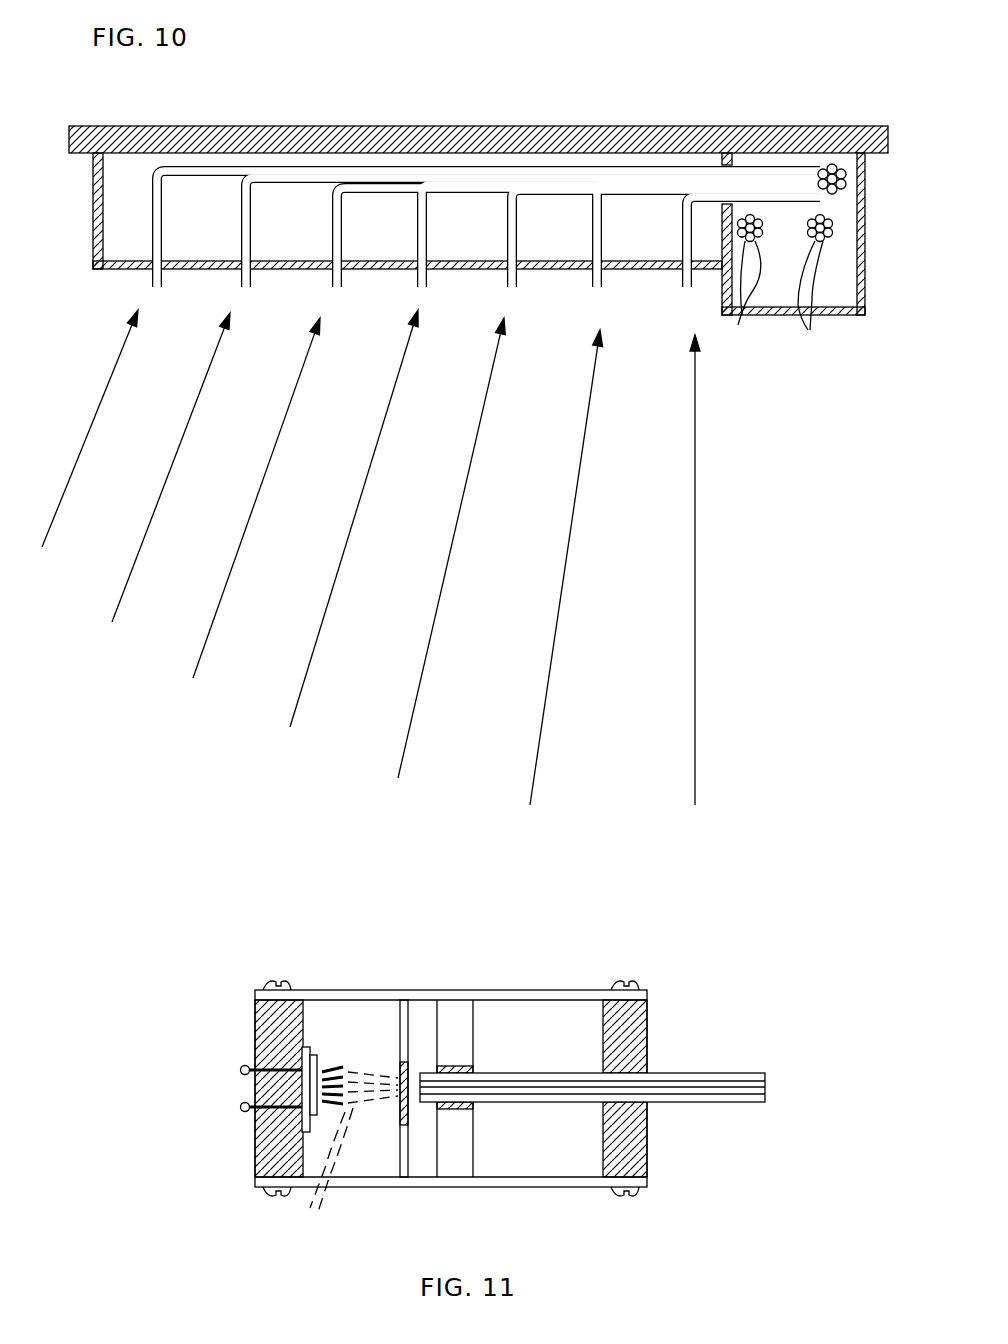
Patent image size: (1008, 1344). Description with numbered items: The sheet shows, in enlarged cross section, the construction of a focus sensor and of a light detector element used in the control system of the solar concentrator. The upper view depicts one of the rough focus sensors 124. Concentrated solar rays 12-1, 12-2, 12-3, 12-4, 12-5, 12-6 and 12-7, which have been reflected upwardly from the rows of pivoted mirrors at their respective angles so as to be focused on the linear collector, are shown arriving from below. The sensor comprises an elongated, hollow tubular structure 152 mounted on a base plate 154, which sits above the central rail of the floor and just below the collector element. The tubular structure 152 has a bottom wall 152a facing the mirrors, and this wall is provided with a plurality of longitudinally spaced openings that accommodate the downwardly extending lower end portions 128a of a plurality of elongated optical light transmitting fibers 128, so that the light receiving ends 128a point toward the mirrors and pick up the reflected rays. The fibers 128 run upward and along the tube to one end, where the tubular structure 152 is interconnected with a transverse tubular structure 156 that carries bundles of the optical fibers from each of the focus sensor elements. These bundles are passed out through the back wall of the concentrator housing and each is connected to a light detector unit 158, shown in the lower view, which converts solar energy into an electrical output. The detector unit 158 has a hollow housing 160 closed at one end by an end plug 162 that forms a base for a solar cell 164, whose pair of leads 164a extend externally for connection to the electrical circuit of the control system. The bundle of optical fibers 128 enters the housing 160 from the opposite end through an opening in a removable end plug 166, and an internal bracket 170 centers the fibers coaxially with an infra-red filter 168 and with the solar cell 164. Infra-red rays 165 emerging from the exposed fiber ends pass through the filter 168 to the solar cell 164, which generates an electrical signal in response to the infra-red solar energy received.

In FIG. 10, the base plate 154 is at (69, 127).
In FIG. 10, the tubular structure 152 is at (93, 215).
In FIG. 10, the bottom wall 152a is at (290, 270).
In FIG. 10, the rough focus sensor 124 is at (77, 280).
In FIG. 10, the light receiving ends of optical fibers 128a is at (246, 288).
In FIG. 10, the optical light transmitting fibers 128 is at (780, 193).
In FIG. 11, the optical light transmitting fibers 128 is at (730, 1098).
In FIG. 10, the transverse tubular structure 156 is at (865, 285).
In FIG. 10, the reflected sun ray 12-1 is at (50, 527).
In FIG. 10, the reflected sun ray 12-2 is at (123, 592).
In FIG. 10, the reflected sun ray 12-3 is at (208, 640).
In FIG. 10, the reflected sun ray 12-4 is at (300, 700).
In FIG. 10, the reflected sun ray 12-5 is at (408, 735).
In FIG. 10, the reflected sun ray 12-6 is at (538, 740).
In FIG. 10, the reflected sun ray 12-7 is at (695, 745).
In FIG. 11, the light detector unit 158 is at (472, 1223).
In FIG. 11, the hollow housing 160 is at (518, 1000).
In FIG. 11, the end plug 162 is at (260, 1036).
In FIG. 11, the solar cell 164 is at (318, 1056).
In FIG. 11, the leads 164a is at (262, 1094).
In FIG. 11, the infra-red rays 165 is at (326, 1175).
In FIG. 11, the removable end plug 166 is at (647, 1130).
In FIG. 11, the infra-red filter 168 is at (406, 1075).
In FIG. 11, the internal bracket 170 is at (462, 1110).